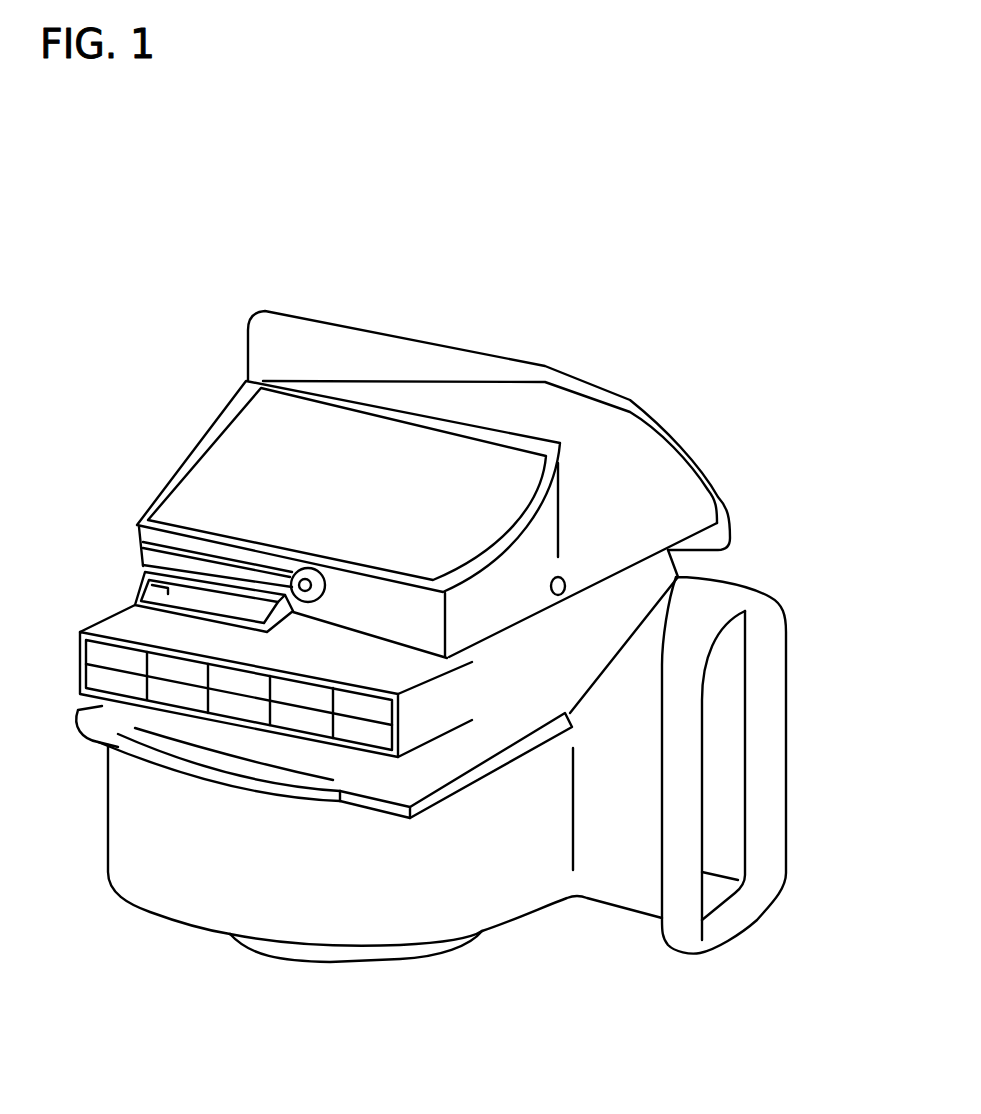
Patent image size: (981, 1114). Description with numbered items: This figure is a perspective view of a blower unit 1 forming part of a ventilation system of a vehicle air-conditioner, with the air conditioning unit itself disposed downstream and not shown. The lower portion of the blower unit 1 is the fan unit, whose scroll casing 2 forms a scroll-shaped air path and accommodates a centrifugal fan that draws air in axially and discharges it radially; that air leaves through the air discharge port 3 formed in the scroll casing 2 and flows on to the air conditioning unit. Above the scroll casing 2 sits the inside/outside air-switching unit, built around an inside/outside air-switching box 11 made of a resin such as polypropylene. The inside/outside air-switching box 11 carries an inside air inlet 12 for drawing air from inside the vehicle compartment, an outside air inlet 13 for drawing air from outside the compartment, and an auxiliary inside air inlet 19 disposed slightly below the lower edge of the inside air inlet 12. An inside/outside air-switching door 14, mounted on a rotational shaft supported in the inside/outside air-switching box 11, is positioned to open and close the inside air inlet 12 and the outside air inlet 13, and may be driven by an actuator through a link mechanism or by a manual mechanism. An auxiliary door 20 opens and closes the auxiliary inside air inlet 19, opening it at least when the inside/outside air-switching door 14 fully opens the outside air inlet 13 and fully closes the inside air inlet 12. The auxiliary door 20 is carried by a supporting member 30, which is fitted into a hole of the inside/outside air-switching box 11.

The blower unit 1 is at (253, 282).
The scroll casing 2 is at (203, 900).
The air discharge port 3 is at (723, 818).
The inside/outside air-switching box 11 is at (597, 533).
The inside air inlet 12 is at (216, 452).
The outside air inlet 13 is at (630, 393).
The inside/outside air-switching door 14 is at (217, 482).
The auxiliary inside air inlet 19 is at (147, 582).
The auxiliary door 20 is at (207, 600).
The supporting member 30 is at (157, 552).